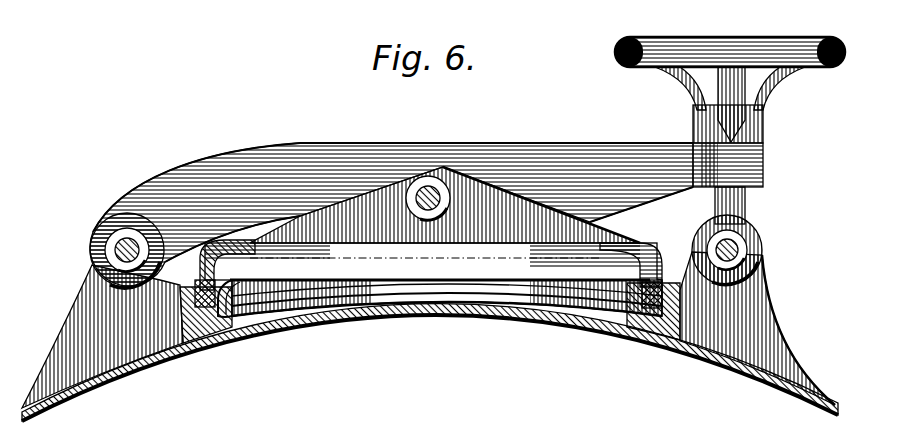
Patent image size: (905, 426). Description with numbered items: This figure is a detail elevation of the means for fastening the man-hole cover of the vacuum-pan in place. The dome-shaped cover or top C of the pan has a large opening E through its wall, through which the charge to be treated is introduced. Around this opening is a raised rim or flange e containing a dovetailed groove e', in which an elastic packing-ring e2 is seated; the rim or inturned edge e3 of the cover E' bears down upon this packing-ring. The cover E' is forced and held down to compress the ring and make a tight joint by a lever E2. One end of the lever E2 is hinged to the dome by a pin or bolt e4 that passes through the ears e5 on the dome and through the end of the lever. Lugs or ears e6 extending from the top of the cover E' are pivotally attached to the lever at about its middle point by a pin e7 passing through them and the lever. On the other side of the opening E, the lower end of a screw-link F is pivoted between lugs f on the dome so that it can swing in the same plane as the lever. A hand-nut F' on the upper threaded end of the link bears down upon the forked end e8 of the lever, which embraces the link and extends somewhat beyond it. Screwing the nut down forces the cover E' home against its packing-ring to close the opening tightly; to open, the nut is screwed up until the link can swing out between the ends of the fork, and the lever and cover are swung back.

The dome-shaped cover or top C is at (760, 380).
The opening E is at (448, 304).
The cover E' is at (433, 265).
The lever E2 is at (391, 202).
The raised rim or flange e is at (206, 326).
The dovetailed groove e' is at (223, 321).
The elastic packing-ring e2 is at (203, 281).
The rim or inturned edge e3 is at (227, 257).
The pin or bolt e4 is at (100, 246).
The ears e5 is at (92, 320).
The lugs or ears e6 is at (445, 205).
The pin e7 is at (742, 170).
The forked end e8 is at (458, 201).
The screw-link F is at (743, 206).
The hand-nut F' is at (730, 81).
The lugs f is at (773, 322).